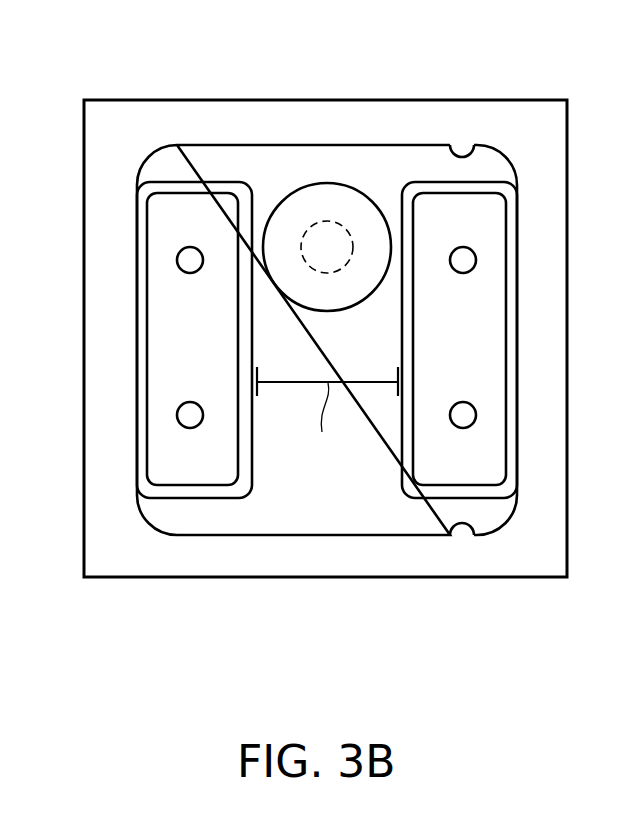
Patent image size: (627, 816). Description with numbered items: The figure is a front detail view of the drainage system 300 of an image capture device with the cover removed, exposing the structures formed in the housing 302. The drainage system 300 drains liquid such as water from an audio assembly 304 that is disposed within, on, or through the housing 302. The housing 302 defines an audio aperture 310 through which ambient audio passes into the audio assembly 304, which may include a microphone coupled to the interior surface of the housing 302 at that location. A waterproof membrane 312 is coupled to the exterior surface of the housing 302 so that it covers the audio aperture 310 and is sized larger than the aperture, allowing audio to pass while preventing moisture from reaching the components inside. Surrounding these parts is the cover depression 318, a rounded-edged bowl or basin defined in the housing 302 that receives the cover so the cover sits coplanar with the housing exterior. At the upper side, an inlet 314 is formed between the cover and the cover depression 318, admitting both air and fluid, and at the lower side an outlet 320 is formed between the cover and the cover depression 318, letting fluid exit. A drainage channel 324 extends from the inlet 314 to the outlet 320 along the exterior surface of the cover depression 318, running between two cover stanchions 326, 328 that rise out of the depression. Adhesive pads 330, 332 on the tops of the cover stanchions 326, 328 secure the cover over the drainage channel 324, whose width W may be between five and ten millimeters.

The drainage system 300 is at (324, 342).
The housing 302 is at (145, 100).
The audio assembly 304 is at (342, 225).
The audio aperture 310 is at (308, 225).
The waterproof membrane 312 is at (328, 313).
The inlet 314 is at (477, 146).
The cover depression 318 is at (307, 342).
The outlet 320 is at (463, 522).
The drainage channel 324 is at (252, 422).
The cover stanchion 326 is at (137, 355).
The cover stanchion 328 is at (499, 355).
The adhesive pad 330 is at (146, 338).
The adhesive pad 332 is at (506, 338).